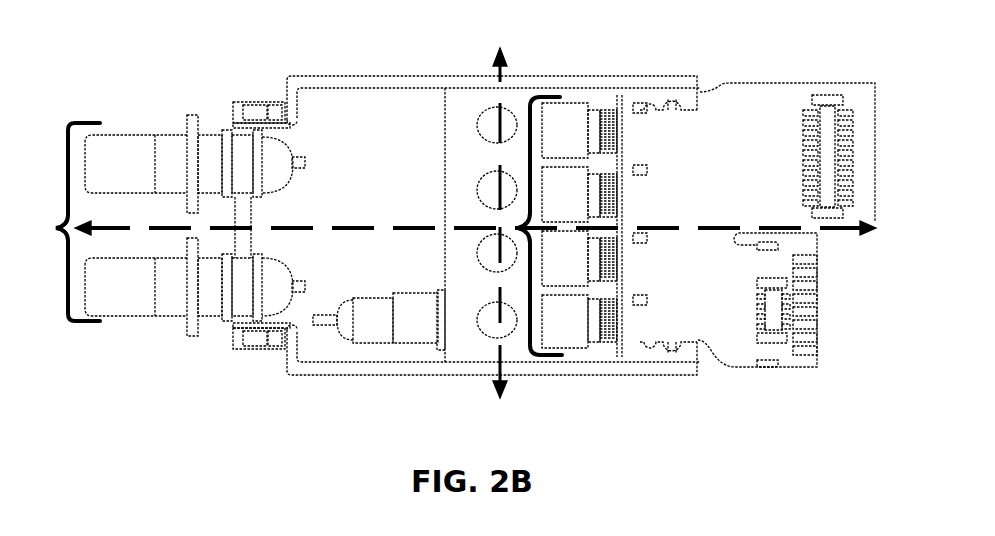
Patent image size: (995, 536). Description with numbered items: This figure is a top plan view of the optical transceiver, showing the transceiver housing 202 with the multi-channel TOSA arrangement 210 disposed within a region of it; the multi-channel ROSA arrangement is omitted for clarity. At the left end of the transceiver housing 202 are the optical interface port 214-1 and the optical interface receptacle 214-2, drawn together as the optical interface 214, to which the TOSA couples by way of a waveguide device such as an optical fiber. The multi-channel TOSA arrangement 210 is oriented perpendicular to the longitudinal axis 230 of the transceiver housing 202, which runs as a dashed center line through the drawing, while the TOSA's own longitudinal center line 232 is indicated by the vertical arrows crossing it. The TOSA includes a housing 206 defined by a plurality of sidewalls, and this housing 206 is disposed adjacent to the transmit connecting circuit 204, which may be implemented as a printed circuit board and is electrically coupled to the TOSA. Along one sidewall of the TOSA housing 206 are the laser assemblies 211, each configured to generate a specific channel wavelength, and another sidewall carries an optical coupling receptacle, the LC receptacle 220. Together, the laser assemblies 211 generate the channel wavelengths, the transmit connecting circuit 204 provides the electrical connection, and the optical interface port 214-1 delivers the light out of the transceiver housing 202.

The transceiver housing 202 is at (577, 360).
The transmit connecting circuit 204 is at (690, 333).
The housing 206 is at (456, 141).
The multi-channel TOSA arrangement 210 is at (453, 335).
The laser assemblies 211 is at (514, 226).
The light assembly 214 is at (72, 318).
The optical interface port 214-1 is at (130, 163).
The optical interface receptacle 214-2 is at (120, 295).
The LC receptacle 220 is at (357, 325).
The longitudinal axis 230 is at (670, 228).
The longitudinal center line 232 is at (502, 60).